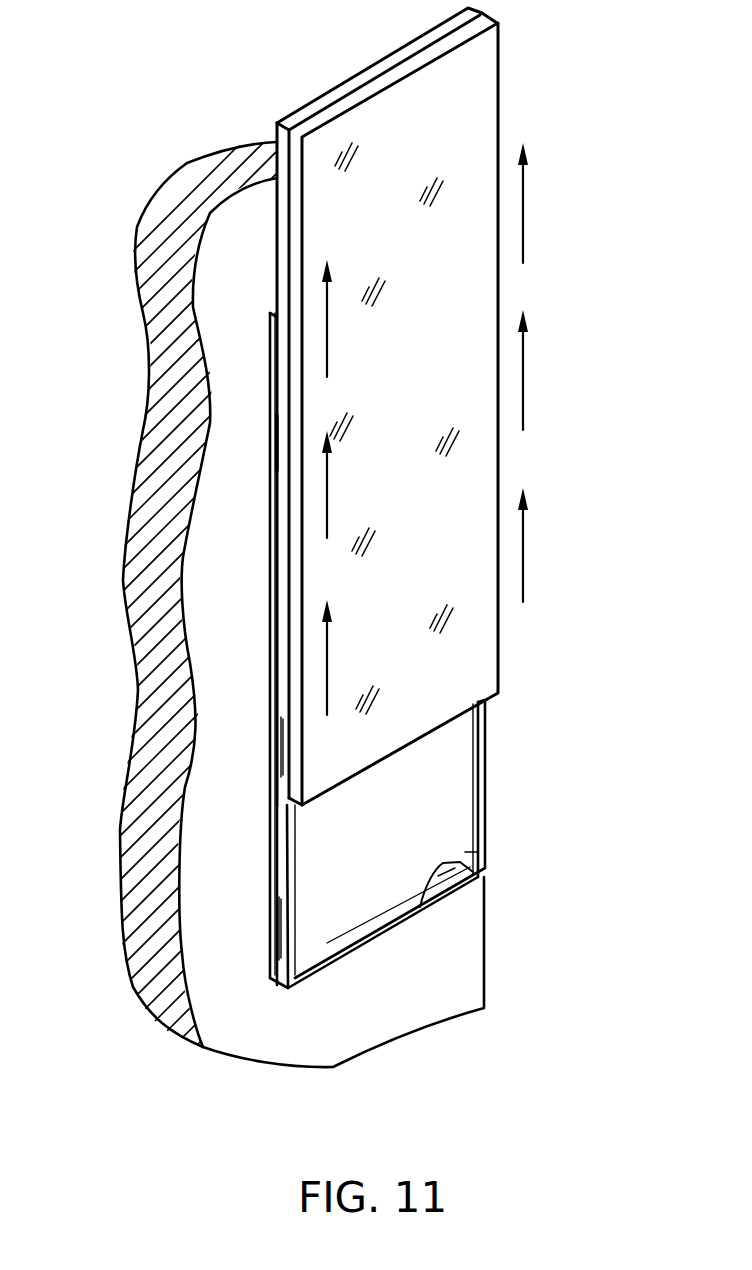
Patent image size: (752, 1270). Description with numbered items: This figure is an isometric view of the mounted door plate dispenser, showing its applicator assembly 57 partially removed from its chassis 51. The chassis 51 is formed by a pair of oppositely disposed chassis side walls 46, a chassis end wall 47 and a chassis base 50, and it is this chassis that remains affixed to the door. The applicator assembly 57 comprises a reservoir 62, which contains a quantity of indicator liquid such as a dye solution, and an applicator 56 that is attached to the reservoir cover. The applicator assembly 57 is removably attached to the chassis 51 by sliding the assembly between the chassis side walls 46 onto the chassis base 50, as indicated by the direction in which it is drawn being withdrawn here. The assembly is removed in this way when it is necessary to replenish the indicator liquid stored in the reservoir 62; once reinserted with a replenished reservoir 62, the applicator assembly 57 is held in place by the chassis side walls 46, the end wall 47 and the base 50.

The chassis side walls 46 is at (280, 855).
The chassis end wall 47 is at (488, 863).
The chassis base 50 is at (432, 797).
The chassis 51 is at (500, 742).
The applicator 56 is at (440, 378).
The applicator assembly 57 is at (527, 62).
The reservoir 62 is at (368, 72).